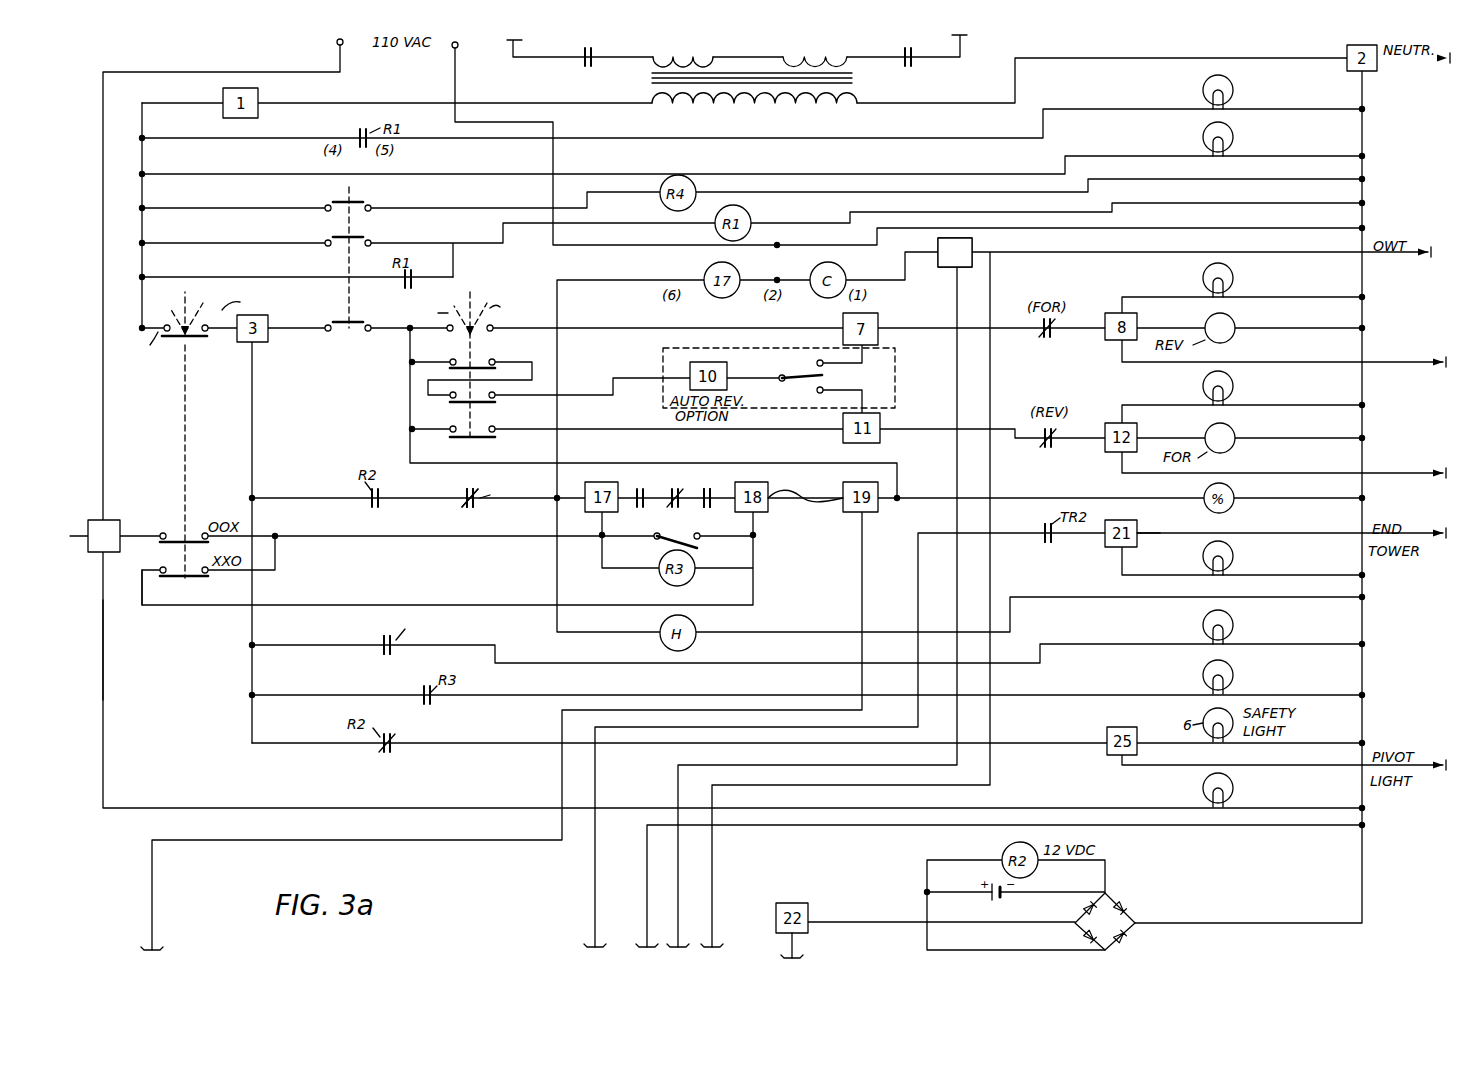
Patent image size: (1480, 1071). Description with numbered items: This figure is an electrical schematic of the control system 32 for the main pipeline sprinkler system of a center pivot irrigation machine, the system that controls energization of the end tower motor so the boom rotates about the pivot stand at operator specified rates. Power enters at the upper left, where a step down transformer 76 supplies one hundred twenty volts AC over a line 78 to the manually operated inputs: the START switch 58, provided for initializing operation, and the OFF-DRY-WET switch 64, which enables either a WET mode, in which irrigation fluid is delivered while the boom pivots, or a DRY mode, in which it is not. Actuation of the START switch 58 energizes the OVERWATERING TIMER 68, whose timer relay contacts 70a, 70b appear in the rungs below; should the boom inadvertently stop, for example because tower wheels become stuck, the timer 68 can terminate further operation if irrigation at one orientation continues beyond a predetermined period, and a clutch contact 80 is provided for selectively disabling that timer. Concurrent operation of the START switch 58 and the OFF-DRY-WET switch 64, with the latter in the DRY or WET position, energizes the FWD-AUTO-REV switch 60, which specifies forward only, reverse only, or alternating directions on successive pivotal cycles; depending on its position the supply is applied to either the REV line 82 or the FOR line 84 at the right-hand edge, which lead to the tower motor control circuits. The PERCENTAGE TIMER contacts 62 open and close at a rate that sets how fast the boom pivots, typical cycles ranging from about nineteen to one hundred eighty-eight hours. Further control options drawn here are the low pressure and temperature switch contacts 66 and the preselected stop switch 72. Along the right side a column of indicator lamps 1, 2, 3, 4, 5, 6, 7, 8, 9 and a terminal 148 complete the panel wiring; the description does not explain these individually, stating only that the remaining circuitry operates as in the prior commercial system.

The control power light 1 is at (1203, 138).
The forward light 2 is at (1203, 387).
The reverse light 3 is at (1203, 278).
The end tower light 4 is at (1203, 558).
The pump circuit light 5 is at (1203, 788).
The terminal 23 connection 6 is at (114, 554).
The power interrupt light 7 is at (1203, 90).
The over water light 8 is at (1203, 626).
The shutdown light 9 is at (1203, 675).
The control system 32 is at (140, 672).
The START switch 58 is at (376, 198).
The FWD-AUTO-REV switch 60 is at (512, 285).
The PERCENTAGE TIMER contacts 62 is at (1036, 541).
The OFF-DRY-WET switch 64 is at (218, 365).
The low PRESSURE/TEMP switch contacts 66 is at (710, 492).
The OVERWATERING TIMER 68 is at (771, 304).
The TR1 contact 70a is at (383, 636).
The TR1 contact 70b is at (478, 489).
The preselected stop switch 72 is at (801, 504).
The step down transformer 76 is at (858, 75).
The line 78 is at (142, 306).
The clutch contact 80 is at (975, 237).
The REV line 82 is at (1420, 355).
The FOR line 84 is at (1423, 476).
The end tower output line 148 is at (1190, 536).